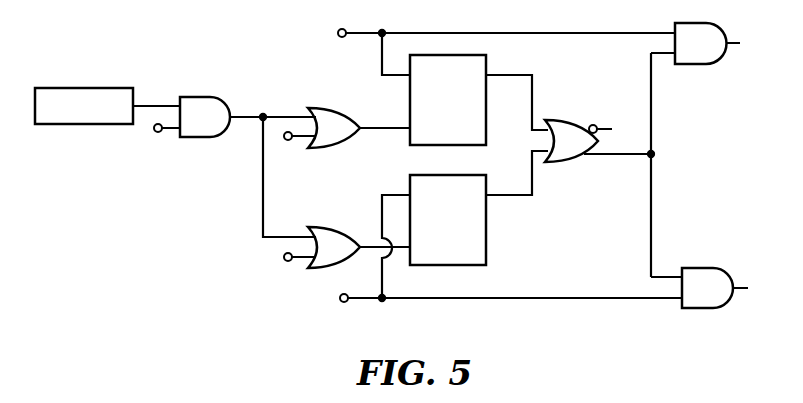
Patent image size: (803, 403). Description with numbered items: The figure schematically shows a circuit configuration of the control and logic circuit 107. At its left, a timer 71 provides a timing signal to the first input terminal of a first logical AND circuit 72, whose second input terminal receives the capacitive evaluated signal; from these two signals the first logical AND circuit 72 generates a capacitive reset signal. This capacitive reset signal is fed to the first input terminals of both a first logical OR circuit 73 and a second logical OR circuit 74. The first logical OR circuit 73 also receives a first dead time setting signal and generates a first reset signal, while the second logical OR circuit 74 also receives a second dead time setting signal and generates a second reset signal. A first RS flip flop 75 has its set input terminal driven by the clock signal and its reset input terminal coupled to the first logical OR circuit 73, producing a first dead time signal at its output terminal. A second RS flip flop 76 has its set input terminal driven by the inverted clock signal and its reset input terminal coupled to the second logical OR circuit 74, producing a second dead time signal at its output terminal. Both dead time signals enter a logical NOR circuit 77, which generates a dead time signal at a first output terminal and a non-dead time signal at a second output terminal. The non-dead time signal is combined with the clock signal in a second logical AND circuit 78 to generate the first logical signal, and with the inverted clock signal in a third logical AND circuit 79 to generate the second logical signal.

The control and logic circuit 107 is at (120, 52).
The timer 71 is at (55, 128).
The first logical AND circuit 72 is at (200, 121).
The first logical OR circuit 73 is at (336, 137).
The second logical OR circuit 74 is at (333, 198).
The first RS flip flop 75 is at (488, 122).
The second RS flip flop 76 is at (490, 246).
The logical NOR circuit 77 is at (600, 144).
The second logical AND circuit 78 is at (558, 150).
The third logical AND circuit 79 is at (561, 288).